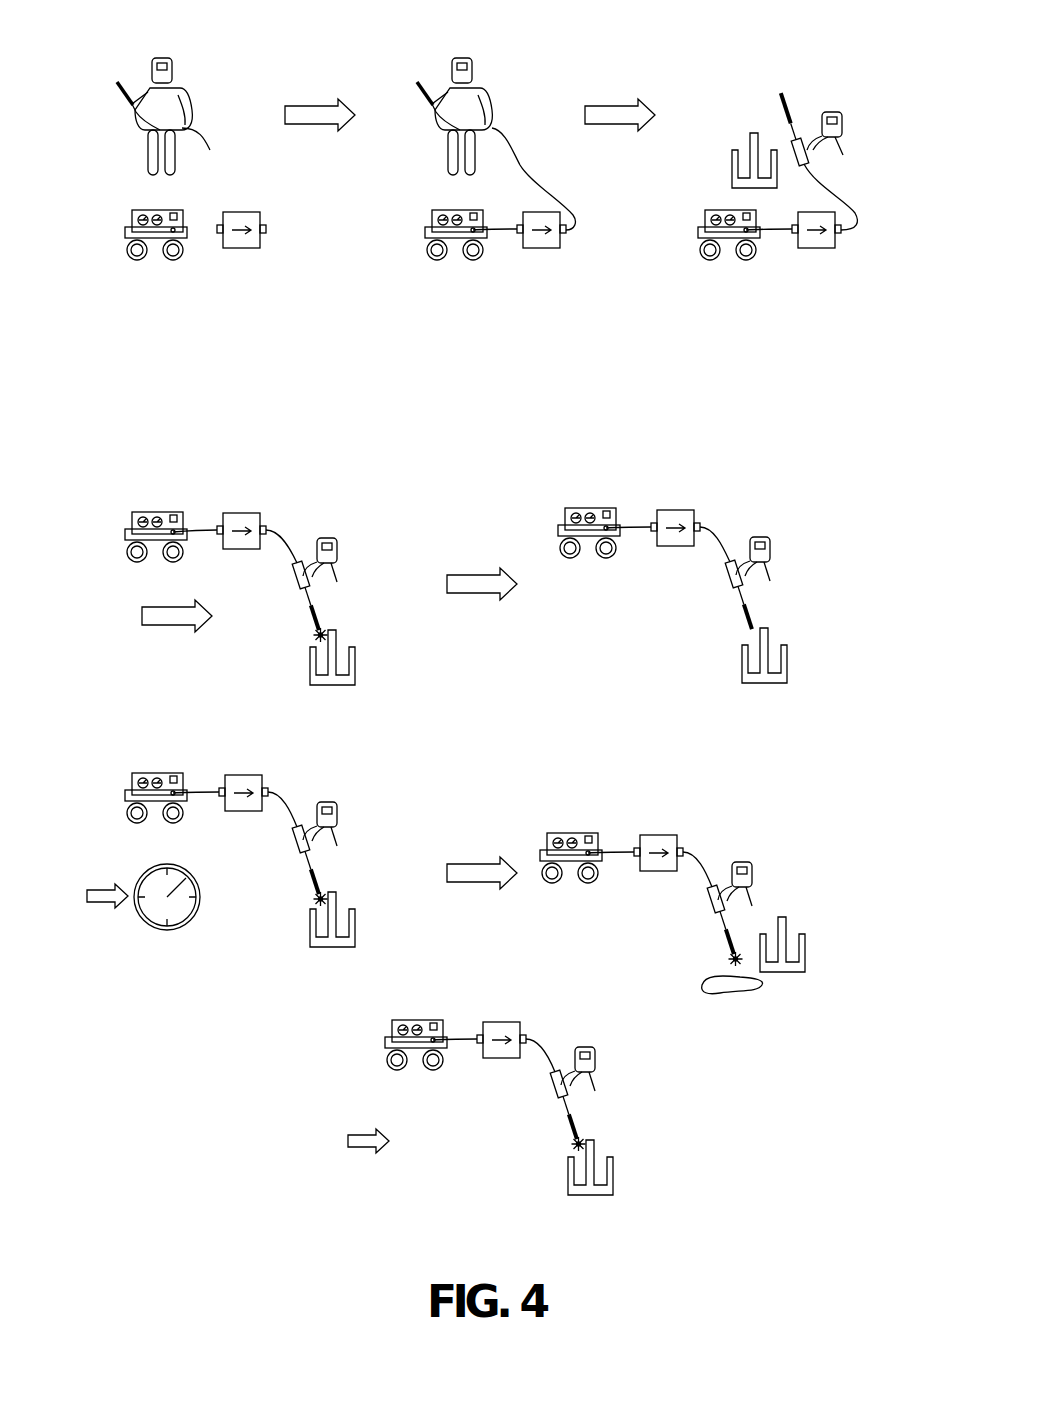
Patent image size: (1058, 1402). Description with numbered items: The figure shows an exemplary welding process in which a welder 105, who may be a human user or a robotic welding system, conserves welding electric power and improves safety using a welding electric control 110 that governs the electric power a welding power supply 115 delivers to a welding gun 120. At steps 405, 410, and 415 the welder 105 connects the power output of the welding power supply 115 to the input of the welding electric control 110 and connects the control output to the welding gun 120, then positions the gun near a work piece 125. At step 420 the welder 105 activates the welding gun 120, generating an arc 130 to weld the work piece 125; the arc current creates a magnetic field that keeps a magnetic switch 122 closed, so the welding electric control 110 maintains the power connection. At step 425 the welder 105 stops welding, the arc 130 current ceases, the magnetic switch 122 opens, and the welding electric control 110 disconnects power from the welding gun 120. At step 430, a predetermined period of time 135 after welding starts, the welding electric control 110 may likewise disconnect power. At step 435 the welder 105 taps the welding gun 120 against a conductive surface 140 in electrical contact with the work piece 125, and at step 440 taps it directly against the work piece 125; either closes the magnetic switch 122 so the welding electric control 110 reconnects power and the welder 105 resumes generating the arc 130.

The welder 105 is at (118, 57).
The welding electric control 110 is at (243, 212).
The welding power supply 115 is at (130, 213).
The welding gun 120 is at (117, 82).
The magnetic switch 122 is at (547, 193).
The work piece 125 is at (731, 157).
The arc 130 is at (313, 643).
The predetermined period of time 135 is at (134, 890).
The surface 140 is at (730, 990).
The step 405 is at (214, 74).
The step 410 is at (514, 74).
The step 415 is at (877, 133).
The step 420 is at (124, 490).
The step 425 is at (755, 470).
The step 430 is at (126, 745).
The step 435 is at (801, 848).
The step 440 is at (627, 1093).